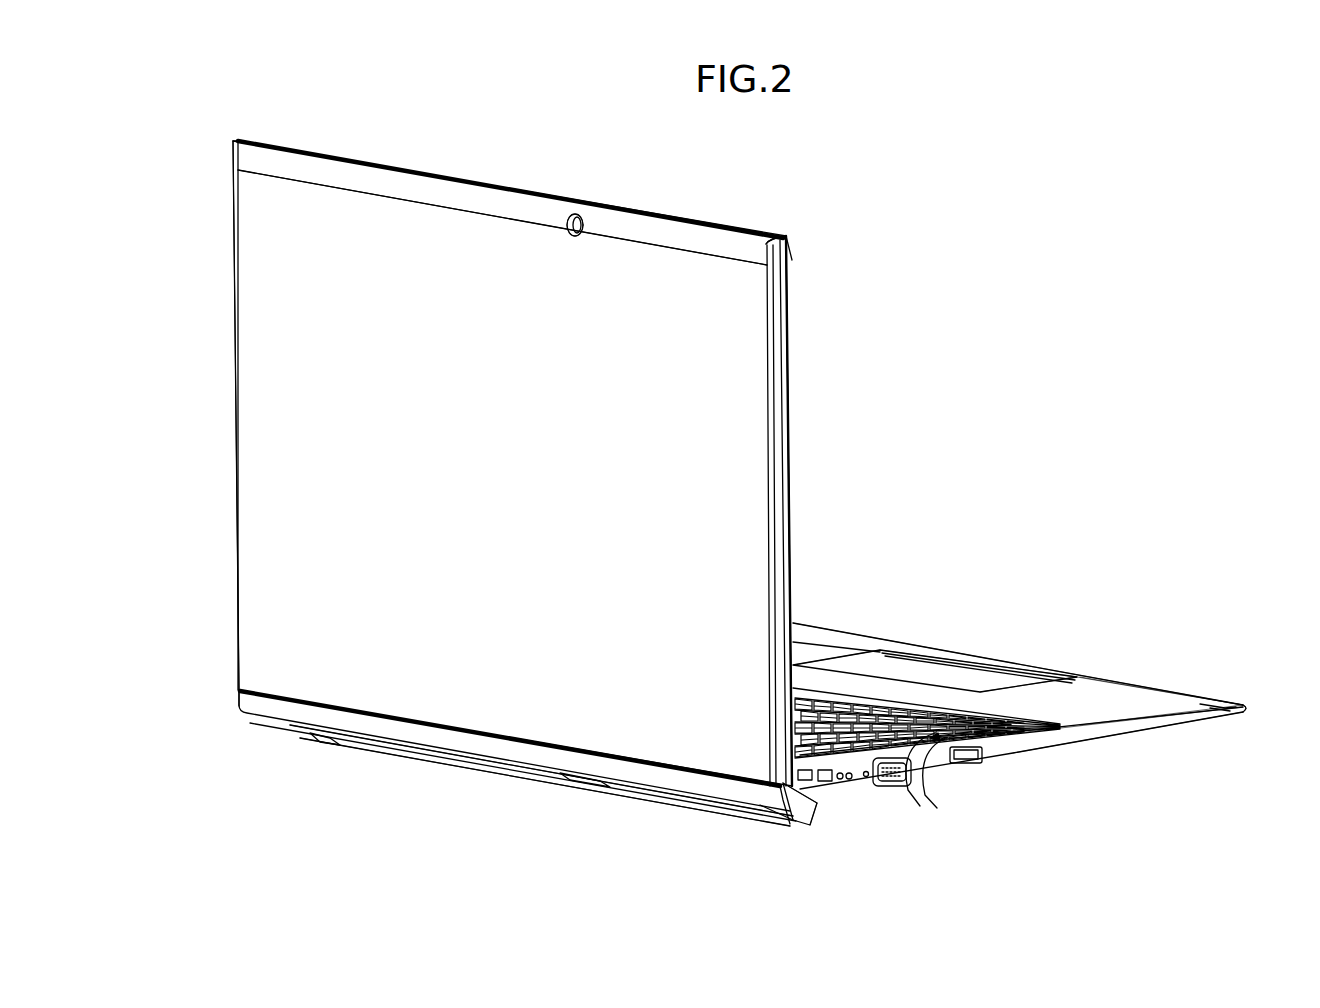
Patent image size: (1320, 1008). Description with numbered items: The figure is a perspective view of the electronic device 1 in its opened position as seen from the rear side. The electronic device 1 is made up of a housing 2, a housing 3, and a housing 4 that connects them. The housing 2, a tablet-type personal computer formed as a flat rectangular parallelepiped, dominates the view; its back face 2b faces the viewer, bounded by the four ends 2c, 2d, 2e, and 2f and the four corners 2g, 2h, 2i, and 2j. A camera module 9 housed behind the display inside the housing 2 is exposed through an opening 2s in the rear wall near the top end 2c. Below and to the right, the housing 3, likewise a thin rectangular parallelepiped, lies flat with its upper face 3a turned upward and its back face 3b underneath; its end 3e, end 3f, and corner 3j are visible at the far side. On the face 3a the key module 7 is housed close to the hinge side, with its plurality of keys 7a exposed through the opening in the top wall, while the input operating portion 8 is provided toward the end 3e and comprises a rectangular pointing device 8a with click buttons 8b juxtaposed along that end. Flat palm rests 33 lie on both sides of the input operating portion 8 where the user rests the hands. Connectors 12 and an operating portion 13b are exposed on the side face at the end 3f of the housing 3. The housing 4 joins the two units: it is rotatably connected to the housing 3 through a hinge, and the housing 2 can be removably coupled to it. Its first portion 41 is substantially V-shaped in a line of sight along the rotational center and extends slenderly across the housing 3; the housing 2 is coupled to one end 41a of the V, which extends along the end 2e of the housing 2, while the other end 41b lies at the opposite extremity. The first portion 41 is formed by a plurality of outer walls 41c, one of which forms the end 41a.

The electronic device 1 is at (405, 116).
The housing 2 is at (783, 233).
The face 2b is at (653, 268).
The end 2c is at (484, 141).
The end 2d is at (233, 370).
The end 2e is at (500, 750).
The end 2f is at (783, 413).
The corner 2g is at (792, 246).
The corner 2h is at (237, 140).
The corner 2i is at (236, 690).
The corner 2j is at (782, 800).
The opening 2s is at (587, 215).
The camera module 9 is at (596, 200).
The housing 3 is at (1226, 700).
The face 3a is at (1115, 710).
The face 3b is at (1062, 744).
The end 3e is at (1100, 673).
The end 3f is at (1097, 755).
The corner 3j is at (1245, 714).
The palm rest 33 is at (820, 643).
The housing 4 is at (797, 824).
The first portion 41 is at (285, 708).
The end 41a is at (428, 705).
The end 41b is at (814, 802).
The wall 41c is at (608, 770).
The key module 7 is at (935, 745).
The key 7a is at (912, 760).
The input operating portion 8 is at (980, 686).
The pointing device 8a is at (955, 682).
The click button 8b is at (845, 672).
The connector 12 is at (895, 788).
The operating portion 13b is at (852, 783).